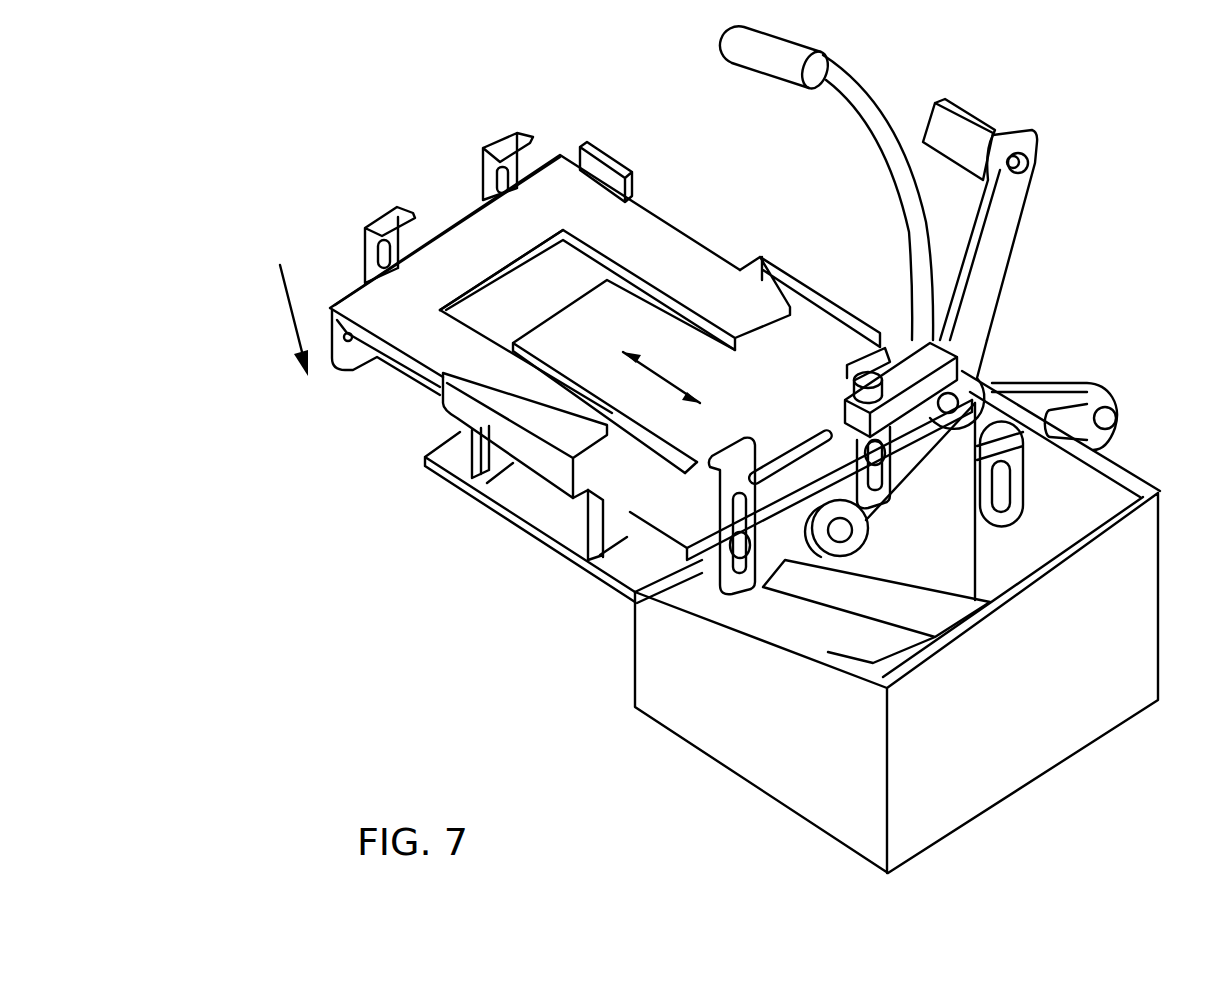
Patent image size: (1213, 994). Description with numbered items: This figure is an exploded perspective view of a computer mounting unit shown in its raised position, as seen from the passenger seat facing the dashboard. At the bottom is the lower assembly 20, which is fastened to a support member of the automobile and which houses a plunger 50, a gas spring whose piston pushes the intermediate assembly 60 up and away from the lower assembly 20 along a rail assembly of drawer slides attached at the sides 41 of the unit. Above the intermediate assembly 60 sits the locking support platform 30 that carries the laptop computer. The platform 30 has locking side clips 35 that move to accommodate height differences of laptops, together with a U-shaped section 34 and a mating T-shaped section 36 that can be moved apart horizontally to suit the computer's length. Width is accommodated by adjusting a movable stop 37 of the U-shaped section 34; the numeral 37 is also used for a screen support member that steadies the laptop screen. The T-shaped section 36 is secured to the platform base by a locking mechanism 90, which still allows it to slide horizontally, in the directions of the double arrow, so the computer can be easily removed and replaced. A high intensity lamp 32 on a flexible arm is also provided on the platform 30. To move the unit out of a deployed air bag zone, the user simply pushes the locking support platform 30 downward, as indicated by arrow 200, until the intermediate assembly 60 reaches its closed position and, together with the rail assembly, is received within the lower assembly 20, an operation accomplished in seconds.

The lower assembly 20 is at (945, 810).
The locking support platform 30 is at (695, 228).
The high intensity lamp 32 is at (740, 42).
The U-shaped section 34 is at (462, 238).
The locking side clips 35 is at (388, 218).
The T-shaped section 36 is at (673, 518).
The movable stop 37 is at (604, 158).
The side 41 is at (937, 615).
The plunger 50 is at (1113, 440).
The intermediate assembly 60 is at (911, 568).
The locking mechanism 90 is at (814, 547).
The arrow 200 is at (285, 300).